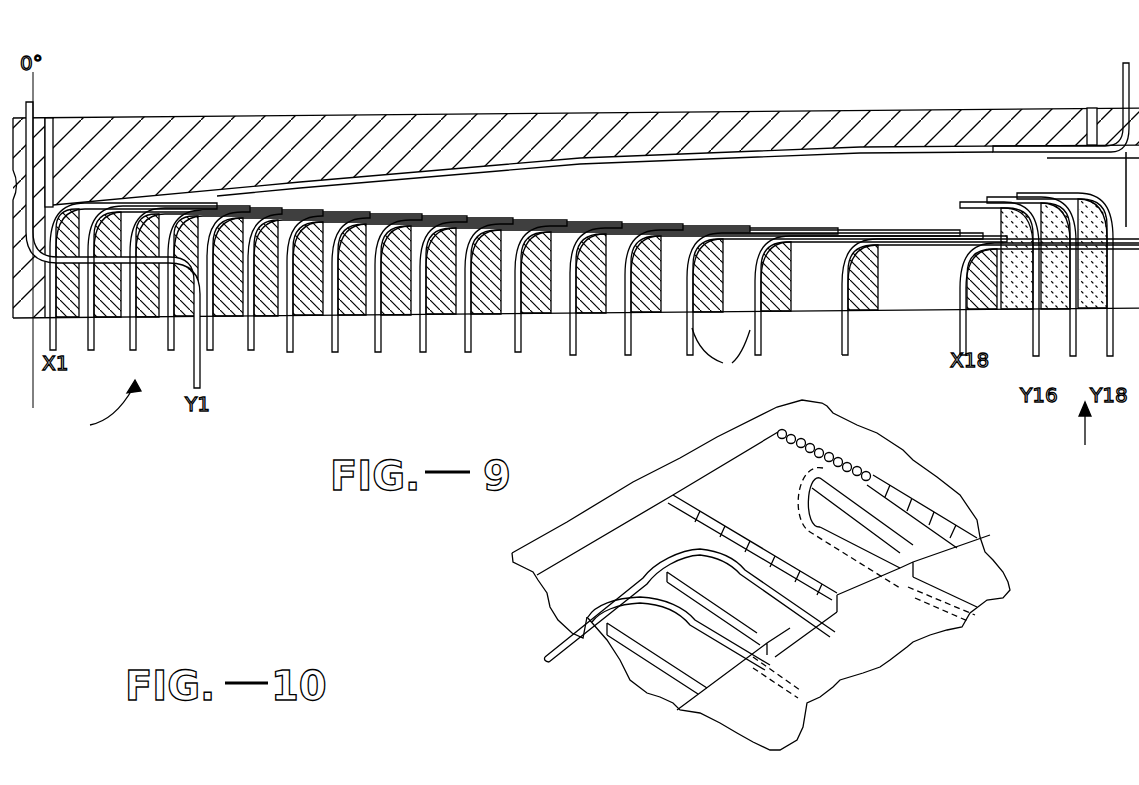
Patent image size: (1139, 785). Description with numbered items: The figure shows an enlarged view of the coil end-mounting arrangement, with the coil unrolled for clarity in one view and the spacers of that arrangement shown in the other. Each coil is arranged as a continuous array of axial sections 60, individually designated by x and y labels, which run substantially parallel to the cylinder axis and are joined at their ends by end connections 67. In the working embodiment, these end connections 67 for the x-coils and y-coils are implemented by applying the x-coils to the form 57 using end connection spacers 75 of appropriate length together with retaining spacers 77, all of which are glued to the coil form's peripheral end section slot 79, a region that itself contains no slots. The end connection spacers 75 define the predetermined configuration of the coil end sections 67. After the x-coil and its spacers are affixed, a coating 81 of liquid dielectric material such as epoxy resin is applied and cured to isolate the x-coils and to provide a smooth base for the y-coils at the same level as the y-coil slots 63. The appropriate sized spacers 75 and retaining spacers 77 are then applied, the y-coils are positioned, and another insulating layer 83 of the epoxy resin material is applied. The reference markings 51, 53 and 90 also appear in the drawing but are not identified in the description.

In FIG. 9, the retaining spacers 77 is at (639, 116).
In FIG. 9, the end connections 67 is at (688, 230).
In FIG. 10, the end connections 67 is at (868, 480).
In FIG. 9, the end connection spacers 75 is at (778, 273).
In FIG. 10, the end connection spacers 75 is at (863, 533).
In FIG. 9, the peripheral end section slot 79 is at (898, 296).
In FIG. 10, the peripheral end section slot 79 is at (540, 580).
In FIG. 9, the axial sections 60 is at (721, 355).
In FIG. 9, the direction arrow 51 is at (104, 408).
In FIG. 9, the direction arrow 53 is at (1087, 437).
In FIG. 9, the end wire 90 is at (1066, 128).
In FIG. 10, the insulating layer 83 is at (843, 428).
In FIG. 10, the coating 81 is at (758, 499).
In FIG. 10, the form 57 is at (998, 565).
In FIG. 10, the y-coil slots 63 is at (1000, 592).